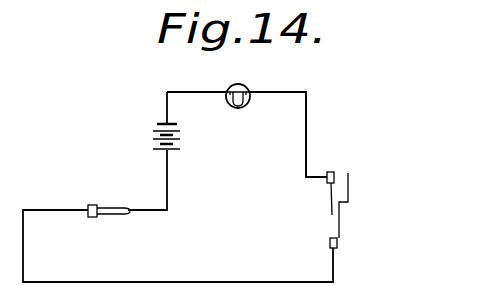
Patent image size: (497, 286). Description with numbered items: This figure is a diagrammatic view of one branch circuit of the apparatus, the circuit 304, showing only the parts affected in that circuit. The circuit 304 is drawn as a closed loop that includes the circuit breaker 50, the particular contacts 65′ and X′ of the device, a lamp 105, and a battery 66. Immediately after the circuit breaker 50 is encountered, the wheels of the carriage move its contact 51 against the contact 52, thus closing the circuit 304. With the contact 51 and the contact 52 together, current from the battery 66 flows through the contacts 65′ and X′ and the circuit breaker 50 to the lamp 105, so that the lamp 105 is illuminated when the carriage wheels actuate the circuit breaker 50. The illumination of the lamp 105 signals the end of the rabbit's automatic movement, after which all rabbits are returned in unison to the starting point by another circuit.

The lamp 105 is at (247, 106).
The battery 66 is at (177, 152).
The circuit 304 is at (310, 128).
The contact 52 is at (325, 195).
The contact 51 is at (349, 197).
The circuit breaker 50 is at (331, 243).
The contact X′ is at (132, 169).
The contact 65′ is at (93, 217).